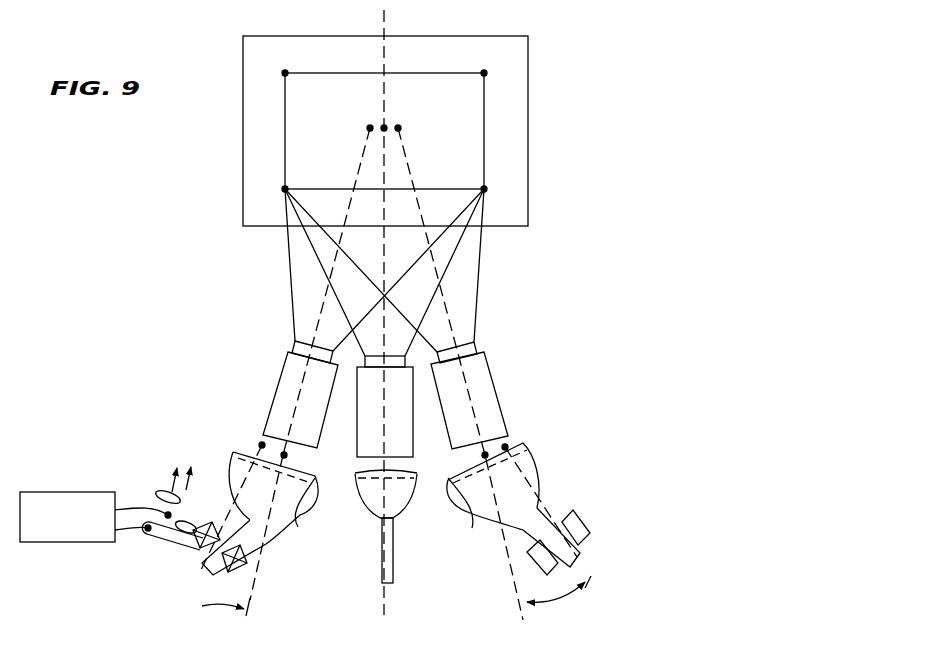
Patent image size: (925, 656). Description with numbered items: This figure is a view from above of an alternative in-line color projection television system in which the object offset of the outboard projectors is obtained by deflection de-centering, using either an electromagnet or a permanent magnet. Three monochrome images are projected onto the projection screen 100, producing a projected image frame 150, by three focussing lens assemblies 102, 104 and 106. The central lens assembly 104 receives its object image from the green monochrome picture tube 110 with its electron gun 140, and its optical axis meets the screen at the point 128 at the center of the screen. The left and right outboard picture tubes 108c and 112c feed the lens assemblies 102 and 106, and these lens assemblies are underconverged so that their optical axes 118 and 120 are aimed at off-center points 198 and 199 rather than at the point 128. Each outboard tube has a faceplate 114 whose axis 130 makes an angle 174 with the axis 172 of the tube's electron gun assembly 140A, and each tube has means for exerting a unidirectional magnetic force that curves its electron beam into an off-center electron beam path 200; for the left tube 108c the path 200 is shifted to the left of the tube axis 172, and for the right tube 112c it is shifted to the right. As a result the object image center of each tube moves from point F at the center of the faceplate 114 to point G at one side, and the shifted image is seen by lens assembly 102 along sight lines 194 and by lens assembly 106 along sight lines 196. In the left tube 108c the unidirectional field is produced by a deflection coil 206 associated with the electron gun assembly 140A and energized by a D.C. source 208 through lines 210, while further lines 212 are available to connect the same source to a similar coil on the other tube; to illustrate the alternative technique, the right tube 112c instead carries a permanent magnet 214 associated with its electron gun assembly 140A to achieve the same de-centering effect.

The projection screen 100 is at (528, 140).
The projected image frame 150 is at (285, 130).
The screen center point 128 is at (386, 124).
The off-center point 198 is at (370, 124).
The off-center point 199 is at (400, 127).
The optical axis 118 is at (322, 306).
The optical axis 120 is at (453, 332).
The focussing lens assembly 104 is at (373, 317).
The focussing lens assembly 102 is at (282, 374).
The focussing lens assembly 106 is at (514, 378).
The green monochrome picture tube 110 is at (398, 548).
The electron gun 140 is at (394, 580).
The left outboard picture tube 108c is at (228, 477).
The right outboard picture tube 112c is at (546, 487).
The faceplate 114 is at (298, 527).
The sight lines 194 is at (240, 450).
The sight lines 196 is at (462, 466).
The off-center electron beam path 200 is at (240, 452).
The faceplate center point F is at (287, 454).
The shifted object image center G is at (261, 443).
The lines 212 is at (167, 490).
The D.C. source 208 is at (68, 543).
The lines 210 is at (172, 552).
The electron gun assembly 140A is at (258, 553).
The deflection coil 206 is at (253, 590).
The electron gun axis 172 is at (592, 579).
The permanent magnet 214 is at (592, 529).
The faceplate axis 130 is at (193, 583).
The angle 174 is at (202, 606).